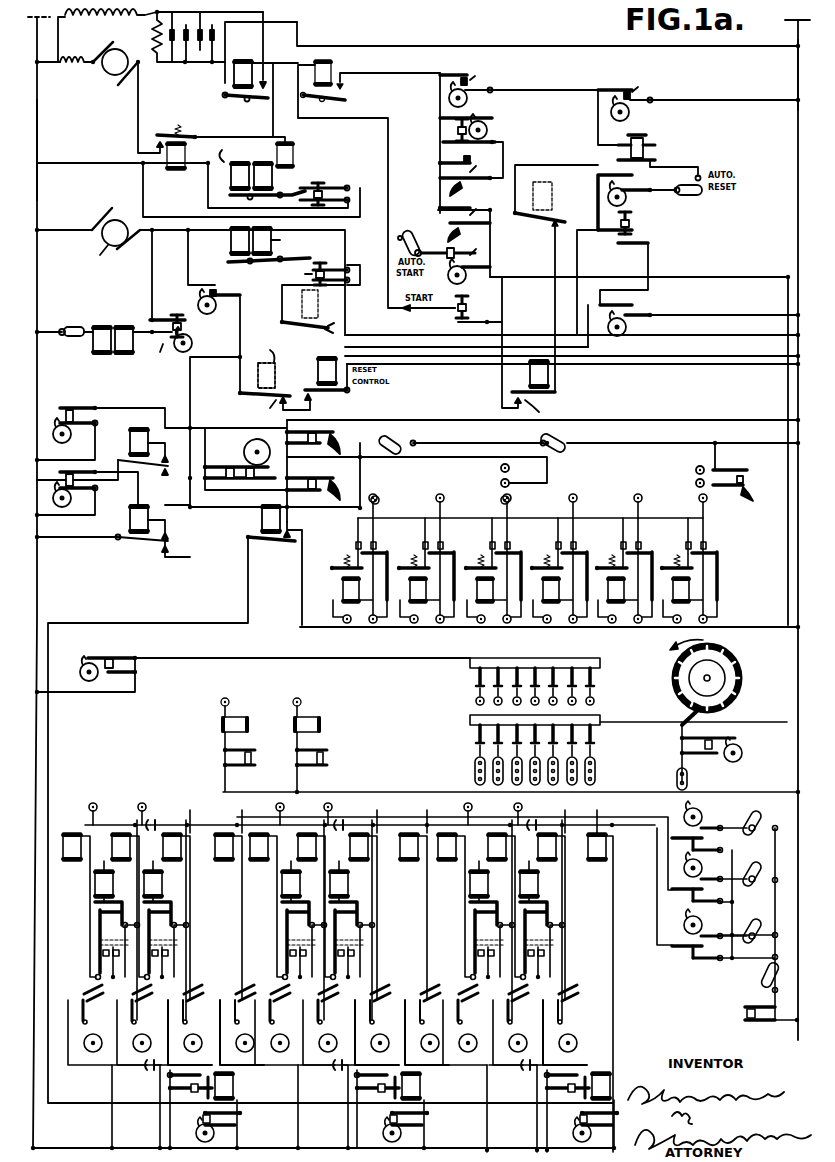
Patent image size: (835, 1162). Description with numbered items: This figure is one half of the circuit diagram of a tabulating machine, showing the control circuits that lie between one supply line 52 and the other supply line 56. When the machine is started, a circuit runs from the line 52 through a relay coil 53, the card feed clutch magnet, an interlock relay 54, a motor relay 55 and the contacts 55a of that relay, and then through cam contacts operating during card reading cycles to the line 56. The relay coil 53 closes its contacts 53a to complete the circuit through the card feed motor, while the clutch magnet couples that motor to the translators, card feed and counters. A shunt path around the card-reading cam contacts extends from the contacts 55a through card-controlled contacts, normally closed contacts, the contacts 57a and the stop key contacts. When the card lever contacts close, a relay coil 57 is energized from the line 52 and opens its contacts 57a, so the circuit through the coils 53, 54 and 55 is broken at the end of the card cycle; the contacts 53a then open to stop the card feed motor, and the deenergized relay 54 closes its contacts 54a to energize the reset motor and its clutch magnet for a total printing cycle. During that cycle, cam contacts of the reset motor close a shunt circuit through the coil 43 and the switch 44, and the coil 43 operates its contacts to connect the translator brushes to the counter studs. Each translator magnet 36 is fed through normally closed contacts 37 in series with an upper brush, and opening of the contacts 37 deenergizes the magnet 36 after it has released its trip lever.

The supply line 52 is at (37, 130).
The relay coil 53 is at (175, 165).
The contacts 53a is at (156, 135).
The interlock relay 54 is at (294, 155).
The contacts 54a is at (322, 332).
The motor relay 55 is at (331, 68).
The contacts 55a is at (347, 91).
The supply line 56 is at (798, 65).
The relay coil 57 is at (560, 192).
The contacts 57a is at (540, 228).
The magnet 36 is at (240, 719).
The contacts 37 is at (262, 757).
The coil 43 is at (98, 352).
The switch 44 is at (72, 327).